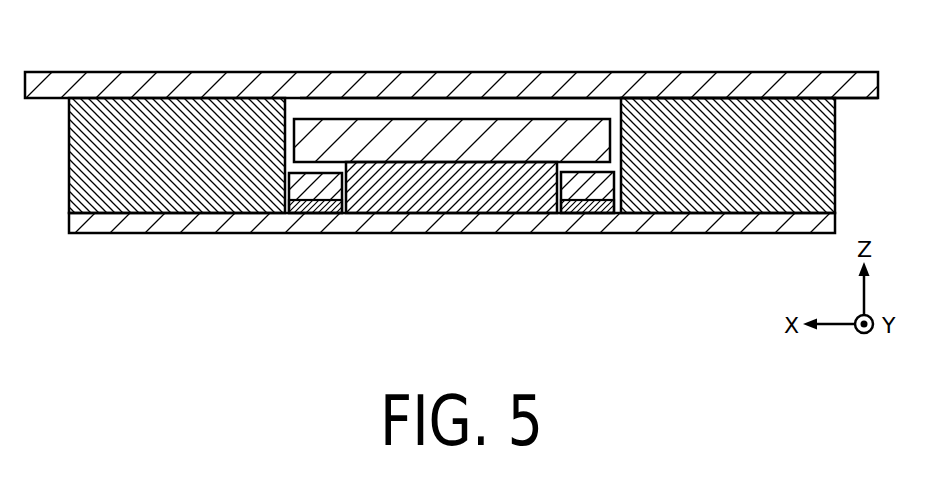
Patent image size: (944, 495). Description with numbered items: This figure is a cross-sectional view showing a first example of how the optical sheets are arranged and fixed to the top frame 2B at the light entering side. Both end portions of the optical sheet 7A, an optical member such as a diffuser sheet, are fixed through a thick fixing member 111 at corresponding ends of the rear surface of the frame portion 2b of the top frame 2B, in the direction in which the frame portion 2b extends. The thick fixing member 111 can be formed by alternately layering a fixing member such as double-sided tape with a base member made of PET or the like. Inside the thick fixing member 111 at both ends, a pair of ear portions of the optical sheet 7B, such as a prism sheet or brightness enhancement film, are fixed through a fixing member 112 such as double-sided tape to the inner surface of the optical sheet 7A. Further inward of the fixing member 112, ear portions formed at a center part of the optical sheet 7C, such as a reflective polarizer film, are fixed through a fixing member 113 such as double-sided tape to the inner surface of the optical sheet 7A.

The top frame 2B is at (627, 66).
The frame portion 2b is at (729, 72).
The optical sheet 7A is at (708, 223).
The optical sheet 7B is at (329, 203).
The optical sheet 7C is at (450, 138).
The thick fixing member 111 is at (107, 198).
The fixing member 112 is at (305, 200).
The fixing member 113 is at (455, 198).